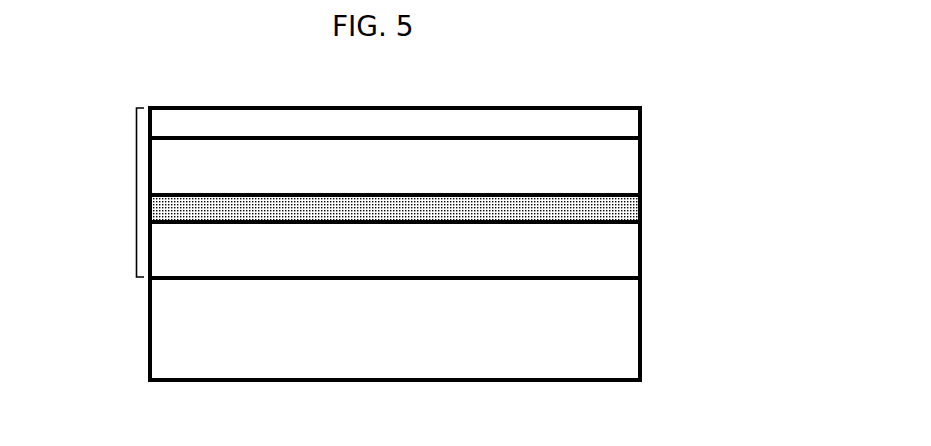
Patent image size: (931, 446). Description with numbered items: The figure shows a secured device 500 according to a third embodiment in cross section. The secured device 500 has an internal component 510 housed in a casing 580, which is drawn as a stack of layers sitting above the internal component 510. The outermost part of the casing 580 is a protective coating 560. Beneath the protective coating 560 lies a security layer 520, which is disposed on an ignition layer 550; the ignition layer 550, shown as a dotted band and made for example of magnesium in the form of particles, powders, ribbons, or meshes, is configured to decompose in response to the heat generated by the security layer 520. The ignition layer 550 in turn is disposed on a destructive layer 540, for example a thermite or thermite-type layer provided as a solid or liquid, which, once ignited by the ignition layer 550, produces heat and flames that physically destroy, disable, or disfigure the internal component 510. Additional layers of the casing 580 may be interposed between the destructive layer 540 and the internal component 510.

The secured device 500 is at (65, 72).
The internal component 510 is at (395, 329).
The security layer 520 is at (613, 166).
The destructive layer 540 is at (616, 257).
The ignition layer 550 is at (618, 212).
The protective coating 560 is at (613, 127).
The casing 580 is at (136, 193).